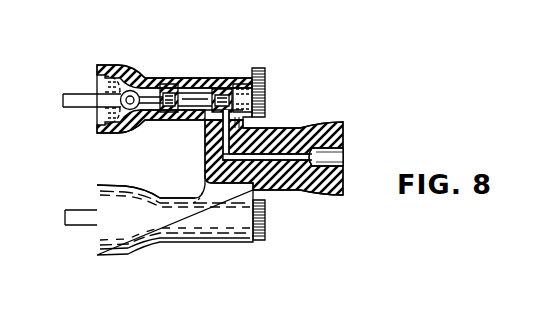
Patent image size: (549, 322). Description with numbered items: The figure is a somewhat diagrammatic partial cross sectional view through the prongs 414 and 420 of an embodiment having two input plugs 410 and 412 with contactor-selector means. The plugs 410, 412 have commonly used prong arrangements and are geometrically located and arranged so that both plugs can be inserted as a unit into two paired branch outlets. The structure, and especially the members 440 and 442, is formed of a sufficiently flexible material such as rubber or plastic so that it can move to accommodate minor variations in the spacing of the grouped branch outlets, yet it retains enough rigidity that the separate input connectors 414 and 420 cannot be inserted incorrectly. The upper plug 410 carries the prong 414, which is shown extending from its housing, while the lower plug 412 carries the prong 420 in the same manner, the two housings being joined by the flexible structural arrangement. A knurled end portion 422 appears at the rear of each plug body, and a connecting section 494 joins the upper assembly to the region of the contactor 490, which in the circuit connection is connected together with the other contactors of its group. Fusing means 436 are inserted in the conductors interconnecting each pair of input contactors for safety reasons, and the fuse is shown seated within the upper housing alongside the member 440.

The plug 410 is at (111, 64).
The plug 412 is at (108, 186).
The prong 414 is at (78, 96).
The prong 420 is at (78, 218).
The knurled end cap 422 is at (267, 95).
The fusing means 436 is at (203, 88).
The member 440 is at (162, 84).
The member 442 is at (180, 243).
The contactor 490 is at (335, 157).
The connecting flange 494 is at (322, 127).